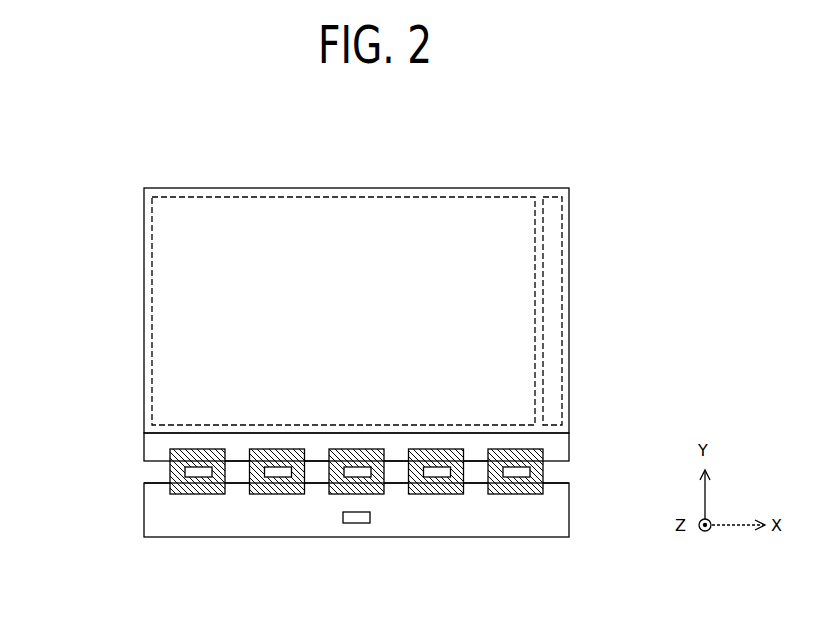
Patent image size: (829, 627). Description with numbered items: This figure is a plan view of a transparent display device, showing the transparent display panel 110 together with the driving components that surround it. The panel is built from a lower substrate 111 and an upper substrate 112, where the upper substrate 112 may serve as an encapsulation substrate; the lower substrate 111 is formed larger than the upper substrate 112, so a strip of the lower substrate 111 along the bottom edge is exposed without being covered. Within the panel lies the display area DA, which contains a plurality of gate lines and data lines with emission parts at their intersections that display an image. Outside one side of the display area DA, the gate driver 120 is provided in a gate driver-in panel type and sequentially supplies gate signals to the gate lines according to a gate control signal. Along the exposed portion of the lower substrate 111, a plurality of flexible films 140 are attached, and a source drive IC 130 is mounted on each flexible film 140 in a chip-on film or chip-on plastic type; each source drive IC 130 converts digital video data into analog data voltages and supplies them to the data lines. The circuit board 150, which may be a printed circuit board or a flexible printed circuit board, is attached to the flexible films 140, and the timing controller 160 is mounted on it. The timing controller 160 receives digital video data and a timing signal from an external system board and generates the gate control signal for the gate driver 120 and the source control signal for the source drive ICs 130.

The display panel 110 is at (328, 300).
The lower substrate 111 is at (320, 447).
The upper substrate 112 is at (144, 364).
The display area DA is at (446, 196).
The gate driver 120 is at (562, 237).
The source drive IC 130 is at (530, 467).
The flexible film 140 is at (540, 488).
The circuit board 150 is at (557, 522).
The timing controller 160 is at (352, 523).